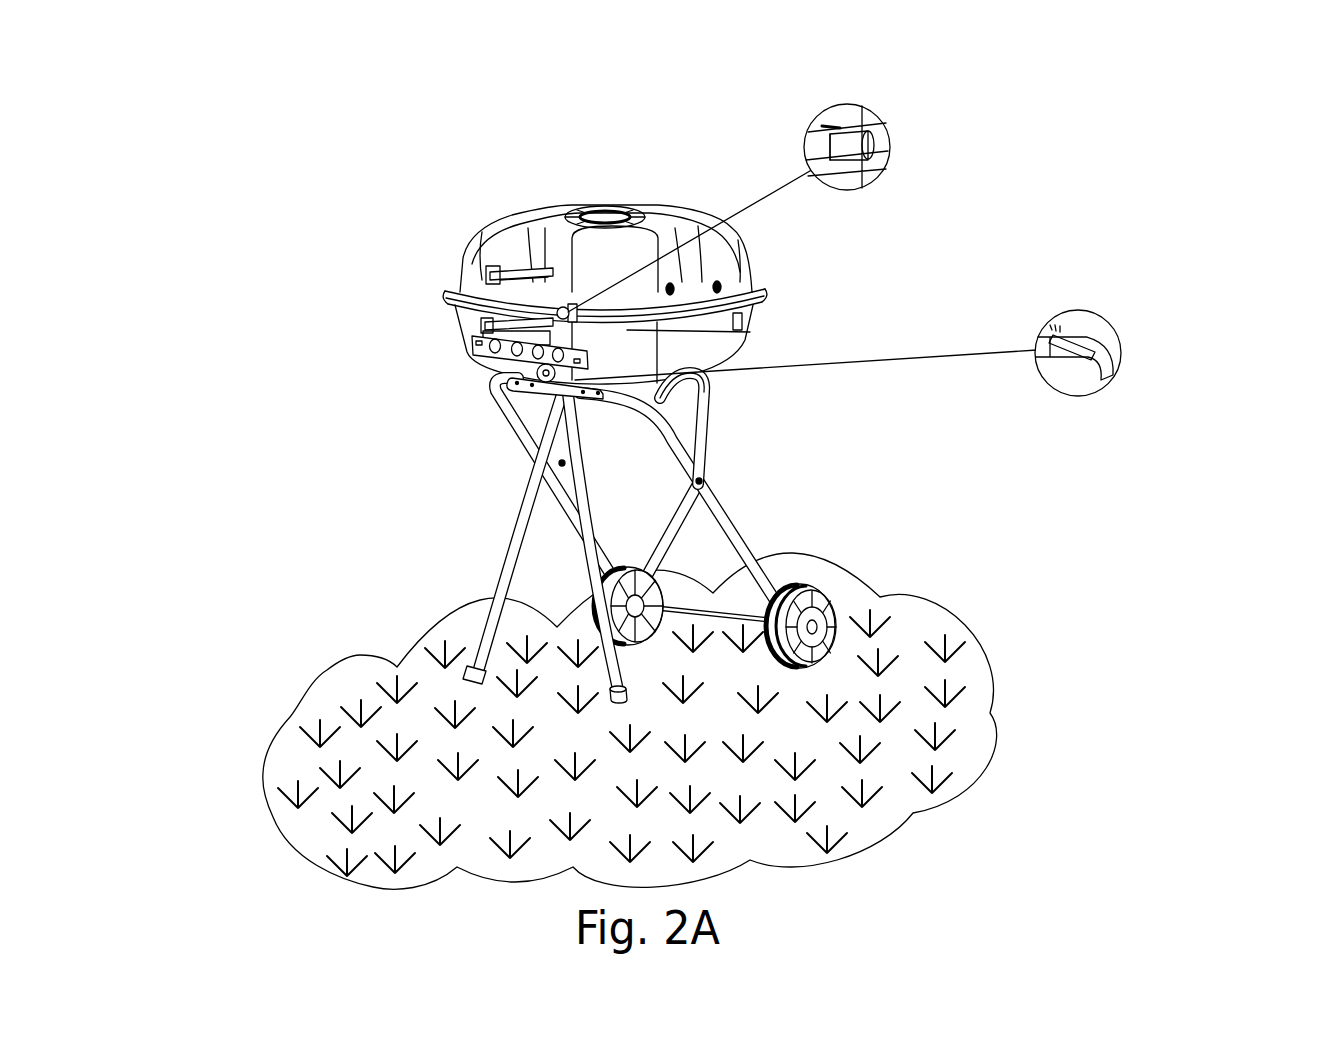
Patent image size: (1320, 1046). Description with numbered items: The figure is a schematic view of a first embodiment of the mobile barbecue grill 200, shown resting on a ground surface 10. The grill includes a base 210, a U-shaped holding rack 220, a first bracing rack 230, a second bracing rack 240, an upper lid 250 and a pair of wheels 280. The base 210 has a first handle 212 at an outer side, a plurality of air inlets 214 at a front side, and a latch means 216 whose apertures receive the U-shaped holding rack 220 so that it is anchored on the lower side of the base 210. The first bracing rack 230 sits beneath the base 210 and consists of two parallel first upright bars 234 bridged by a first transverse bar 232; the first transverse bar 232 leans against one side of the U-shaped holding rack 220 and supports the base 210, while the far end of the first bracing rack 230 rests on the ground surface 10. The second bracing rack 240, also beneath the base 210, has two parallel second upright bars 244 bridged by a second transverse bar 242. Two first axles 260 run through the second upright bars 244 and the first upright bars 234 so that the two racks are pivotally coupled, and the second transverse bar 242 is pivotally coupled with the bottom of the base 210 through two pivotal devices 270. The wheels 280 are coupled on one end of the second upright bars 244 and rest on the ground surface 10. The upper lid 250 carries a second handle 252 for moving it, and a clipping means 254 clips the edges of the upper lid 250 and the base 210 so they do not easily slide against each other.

The ground surface 10 is at (970, 660).
The mobile barbecue grill 200 is at (1003, 252).
The base 210 is at (745, 322).
The first handle 212 is at (485, 327).
The air inlets 214 is at (493, 366).
The latch means 216 is at (1123, 341).
The U-shaped holding rack 220 is at (540, 400).
The first bracing rack 230 is at (916, 393).
The first transverse bar 232 is at (722, 412).
The first upright bars 234 is at (720, 427).
The second bracing rack 240 is at (250, 548).
The second transverse bar 242 is at (577, 517).
The second upright bars 244 is at (527, 560).
The upper lid 250 is at (755, 247).
The second handle 252 is at (505, 271).
The clipping means 254 is at (892, 143).
The first axles 260 is at (675, 480).
The pivotal devices 270 is at (537, 380).
The wheels 280 is at (828, 590).